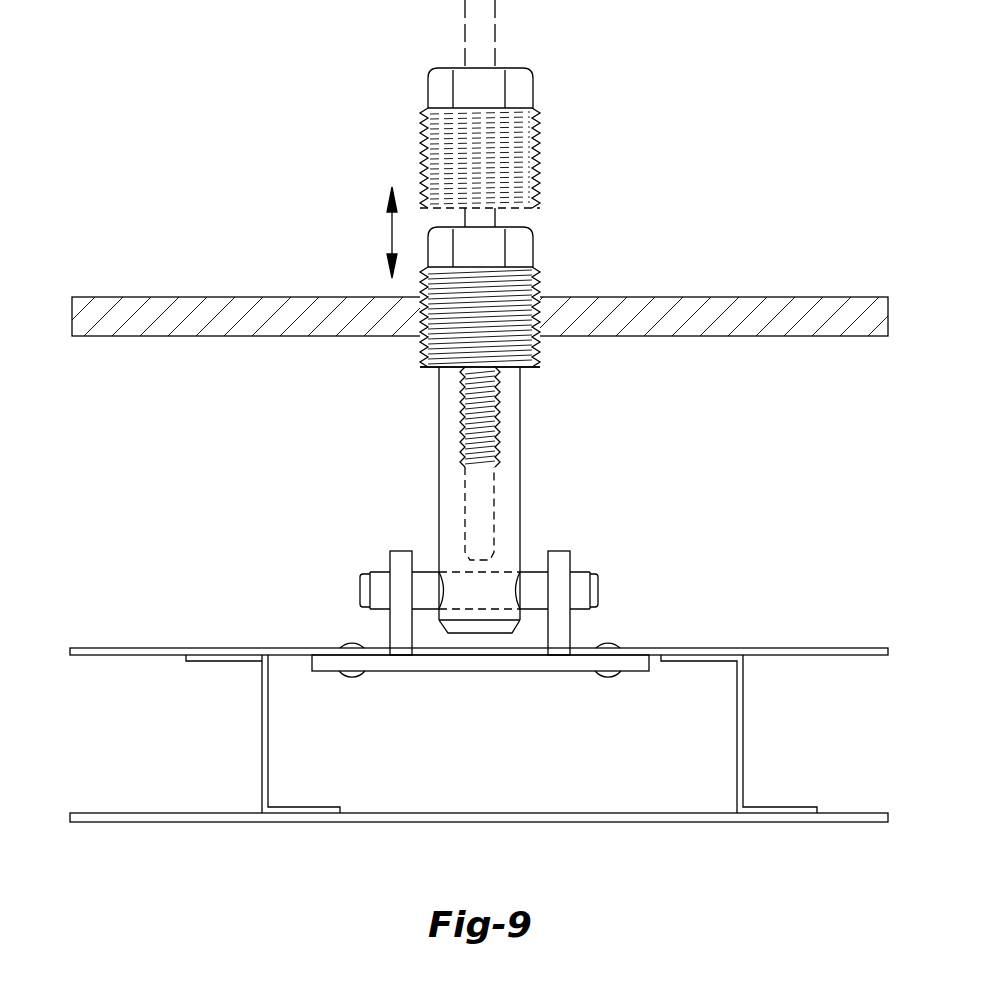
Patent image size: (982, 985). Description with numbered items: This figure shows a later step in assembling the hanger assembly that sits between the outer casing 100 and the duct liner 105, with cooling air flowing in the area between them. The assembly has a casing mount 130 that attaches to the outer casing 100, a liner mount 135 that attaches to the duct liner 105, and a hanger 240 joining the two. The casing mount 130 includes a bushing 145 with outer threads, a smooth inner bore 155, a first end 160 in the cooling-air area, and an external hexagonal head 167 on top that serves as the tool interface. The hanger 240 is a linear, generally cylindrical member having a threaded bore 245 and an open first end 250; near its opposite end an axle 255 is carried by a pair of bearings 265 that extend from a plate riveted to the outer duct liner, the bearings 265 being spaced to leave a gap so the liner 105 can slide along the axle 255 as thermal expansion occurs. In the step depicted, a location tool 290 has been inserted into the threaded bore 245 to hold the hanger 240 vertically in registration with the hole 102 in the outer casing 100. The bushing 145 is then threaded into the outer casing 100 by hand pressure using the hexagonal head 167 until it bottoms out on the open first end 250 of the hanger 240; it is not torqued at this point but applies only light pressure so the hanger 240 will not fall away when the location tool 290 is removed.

The outer casing 100 is at (128, 297).
The hole 102 is at (421, 327).
The duct liner 105 is at (133, 718).
The casing mount 130 is at (510, 325).
The liner mount 135 is at (619, 547).
The bushing 145 is at (533, 95).
The inner bore 155 is at (420, 157).
The first end 160 is at (540, 212).
The external hexagonal head 167 is at (533, 250).
The hanger 240 is at (520, 437).
The threaded bore 245 is at (502, 400).
The first end 250 is at (435, 368).
The axle 255 is at (360, 590).
The bearings 265 is at (390, 628).
The location tool 290 is at (465, 34).